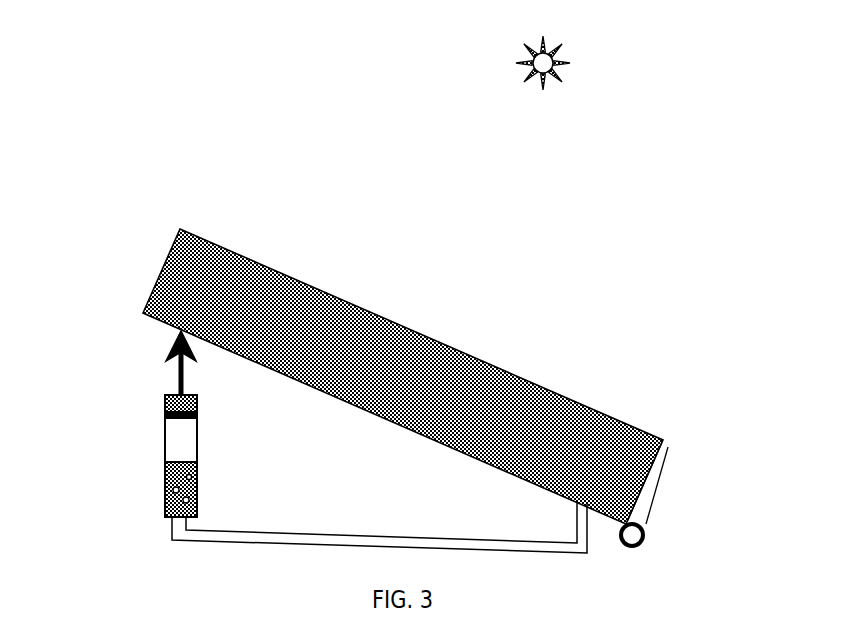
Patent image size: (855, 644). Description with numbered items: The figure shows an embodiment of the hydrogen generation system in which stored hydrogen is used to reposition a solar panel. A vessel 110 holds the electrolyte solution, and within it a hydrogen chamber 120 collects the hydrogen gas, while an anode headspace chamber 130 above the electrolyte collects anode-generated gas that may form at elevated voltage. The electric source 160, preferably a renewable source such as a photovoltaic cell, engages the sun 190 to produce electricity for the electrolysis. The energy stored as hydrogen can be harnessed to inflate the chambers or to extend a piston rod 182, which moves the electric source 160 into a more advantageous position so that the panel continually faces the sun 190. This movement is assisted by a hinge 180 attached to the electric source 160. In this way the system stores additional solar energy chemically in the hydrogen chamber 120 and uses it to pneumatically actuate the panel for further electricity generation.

The vessel 110 is at (168, 500).
The hydrogen chamber 120 is at (190, 442).
The anode headspace chamber 130 is at (168, 433).
The electric source 160 is at (597, 463).
The hinge 180 is at (646, 540).
The piston rod 182 is at (177, 368).
The sun 190 is at (565, 70).